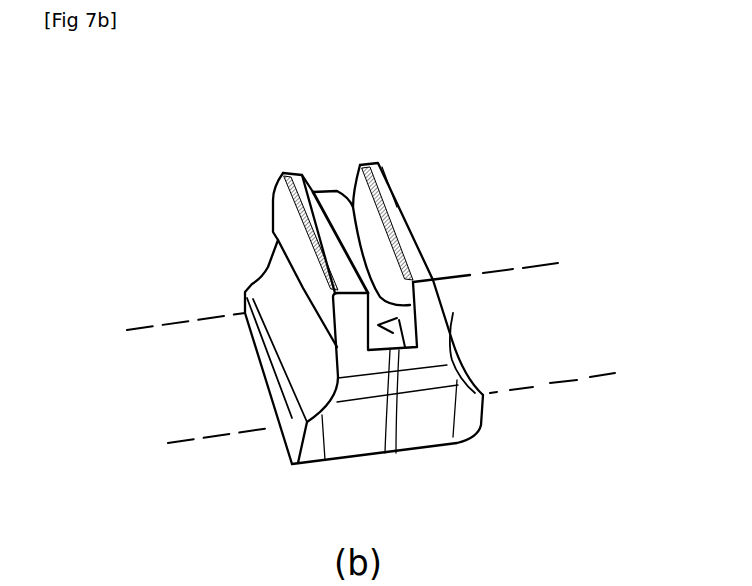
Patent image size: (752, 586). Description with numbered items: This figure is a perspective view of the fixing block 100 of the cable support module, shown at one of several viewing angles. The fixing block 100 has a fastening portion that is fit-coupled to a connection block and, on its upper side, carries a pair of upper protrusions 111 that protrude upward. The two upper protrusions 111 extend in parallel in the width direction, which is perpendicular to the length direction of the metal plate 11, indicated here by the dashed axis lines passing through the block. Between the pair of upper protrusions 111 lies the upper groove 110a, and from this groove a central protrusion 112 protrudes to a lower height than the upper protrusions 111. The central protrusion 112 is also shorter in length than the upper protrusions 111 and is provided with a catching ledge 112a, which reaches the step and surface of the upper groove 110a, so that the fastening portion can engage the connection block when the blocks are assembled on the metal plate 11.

The fixing block 100 is at (214, 238).
The upper protrusions 111 is at (318, 200).
The central protrusion 112 is at (357, 235).
The catching ledge 112a is at (400, 318).
The upper groove 110a is at (405, 347).
The metal plate 11 is at (207, 417).